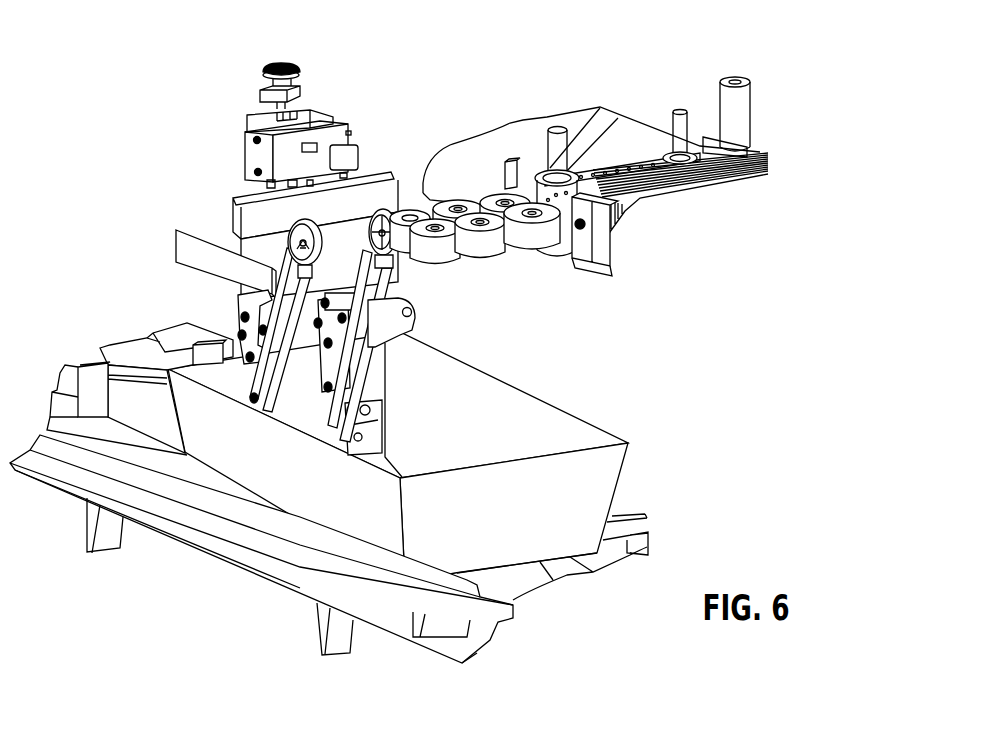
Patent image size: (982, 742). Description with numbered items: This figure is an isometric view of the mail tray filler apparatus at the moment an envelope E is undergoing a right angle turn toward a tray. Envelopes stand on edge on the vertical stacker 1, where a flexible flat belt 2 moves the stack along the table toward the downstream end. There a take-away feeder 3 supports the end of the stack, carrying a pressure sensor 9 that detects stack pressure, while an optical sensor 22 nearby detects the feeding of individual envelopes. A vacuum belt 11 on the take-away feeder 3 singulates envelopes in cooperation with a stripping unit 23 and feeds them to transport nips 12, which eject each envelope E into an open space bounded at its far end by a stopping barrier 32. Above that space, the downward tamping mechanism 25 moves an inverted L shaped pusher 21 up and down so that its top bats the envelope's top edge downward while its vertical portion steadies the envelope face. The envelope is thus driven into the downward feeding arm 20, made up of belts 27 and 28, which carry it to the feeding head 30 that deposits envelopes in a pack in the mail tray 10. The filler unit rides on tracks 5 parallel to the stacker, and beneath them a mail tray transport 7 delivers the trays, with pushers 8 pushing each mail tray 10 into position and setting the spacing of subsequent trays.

The vertical stacker unit 1 is at (595, 187).
The flexible flat belt 2 is at (523, 147).
The take-away feeder 3 is at (699, 91).
The tracks 5 is at (620, 520).
The mail tray transport 7 is at (575, 567).
The pushers 8 is at (95, 372).
The pressure sensor 9 is at (742, 112).
The mail tray 10 is at (540, 418).
The vacuum belt 11 is at (615, 163).
The transport nips 12 is at (523, 243).
The downward feeding arm 20 is at (217, 309).
The inverted L shaped pusher 21 is at (236, 212).
The optical sensor 22 is at (503, 173).
The stripping unit 23 is at (580, 237).
The downward tamping mechanism 25 is at (238, 100).
The belt 27 is at (280, 382).
The belt 28 is at (250, 380).
The feeding head 30 is at (408, 441).
The stopping barrier 32 is at (182, 250).
The envelope E is at (247, 242).